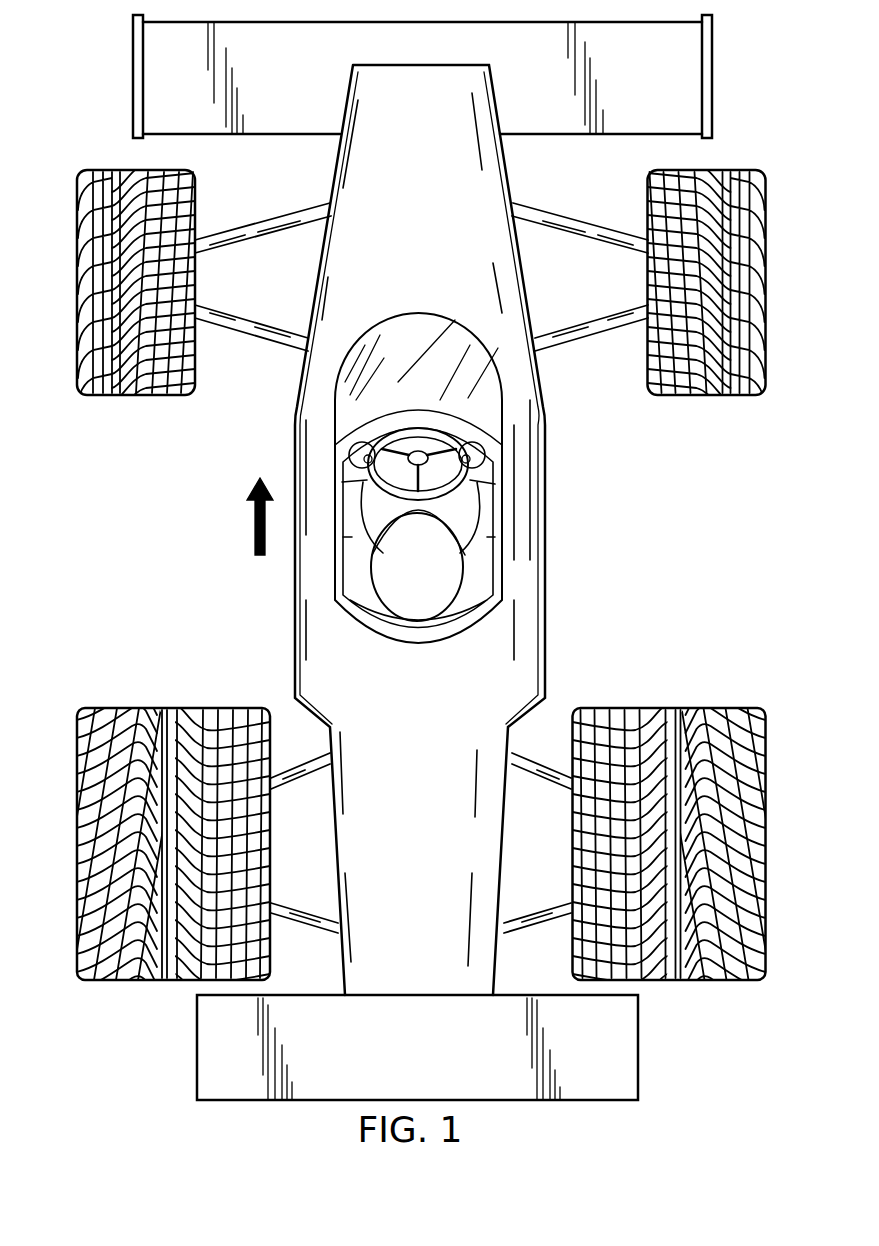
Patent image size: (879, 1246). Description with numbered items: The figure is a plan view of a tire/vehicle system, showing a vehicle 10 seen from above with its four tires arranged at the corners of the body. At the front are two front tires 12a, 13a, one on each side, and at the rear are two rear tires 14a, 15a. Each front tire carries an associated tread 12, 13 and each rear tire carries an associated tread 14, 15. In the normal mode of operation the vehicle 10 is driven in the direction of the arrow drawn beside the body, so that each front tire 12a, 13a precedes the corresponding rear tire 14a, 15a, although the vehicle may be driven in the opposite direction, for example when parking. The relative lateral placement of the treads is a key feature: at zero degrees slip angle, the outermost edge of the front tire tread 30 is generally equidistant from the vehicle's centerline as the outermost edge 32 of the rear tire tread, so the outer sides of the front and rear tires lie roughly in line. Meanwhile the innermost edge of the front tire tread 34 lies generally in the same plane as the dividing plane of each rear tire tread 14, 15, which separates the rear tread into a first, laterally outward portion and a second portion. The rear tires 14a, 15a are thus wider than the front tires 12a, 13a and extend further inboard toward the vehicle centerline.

The vehicle 10 is at (568, 542).
The front tire tread 12 is at (708, 390).
The front tire 12a is at (730, 162).
The front tire tread 13 is at (158, 388).
The front tire 13a is at (110, 160).
The rear tire tread 14 is at (633, 710).
The rear tire 14a is at (693, 697).
The rear tire tread 15 is at (212, 706).
The rear tire 15a is at (152, 697).
The outermost edge of the front tire tread 30 is at (765, 284).
The outermost edge of the rear tire tread 32 is at (765, 780).
The innermost edge of the front tire tread 34 is at (648, 337).